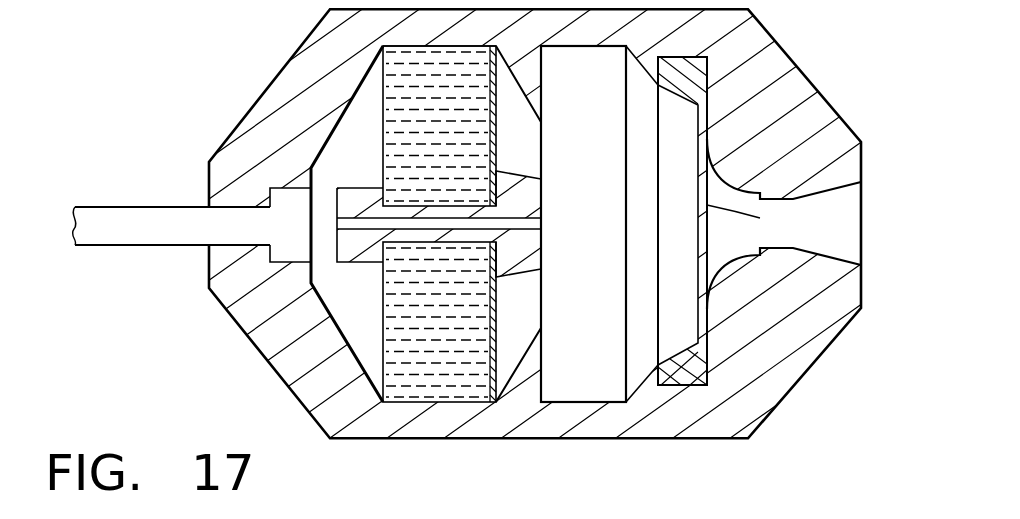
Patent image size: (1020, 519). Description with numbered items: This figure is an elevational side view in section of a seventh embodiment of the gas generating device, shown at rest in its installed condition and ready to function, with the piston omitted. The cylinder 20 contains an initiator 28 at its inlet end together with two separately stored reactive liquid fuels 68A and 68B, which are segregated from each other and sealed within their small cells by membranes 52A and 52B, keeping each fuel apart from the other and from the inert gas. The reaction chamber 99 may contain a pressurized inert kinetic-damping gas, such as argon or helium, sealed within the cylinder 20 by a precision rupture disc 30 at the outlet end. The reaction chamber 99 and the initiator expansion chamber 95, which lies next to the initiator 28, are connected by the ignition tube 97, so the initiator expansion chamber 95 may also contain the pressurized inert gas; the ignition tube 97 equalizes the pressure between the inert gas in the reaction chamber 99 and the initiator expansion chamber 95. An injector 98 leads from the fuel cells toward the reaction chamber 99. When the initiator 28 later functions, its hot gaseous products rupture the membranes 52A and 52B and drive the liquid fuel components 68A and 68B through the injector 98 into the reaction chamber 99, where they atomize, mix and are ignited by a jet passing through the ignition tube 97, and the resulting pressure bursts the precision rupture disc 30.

The cylinder 20 is at (792, 330).
The initiator 28 is at (273, 256).
The precision rupture disc 30 is at (760, 218).
The membrane 52A is at (373, 92).
The membrane 52B is at (498, 136).
The reactive liquid fuel 68A is at (467, 177).
The reactive liquid fuel 68B is at (467, 376).
The initiator expansion chamber 95 is at (370, 170).
The ignition tube 97 is at (373, 231).
The injector 98 is at (530, 160).
The reaction chamber 99 is at (602, 101).